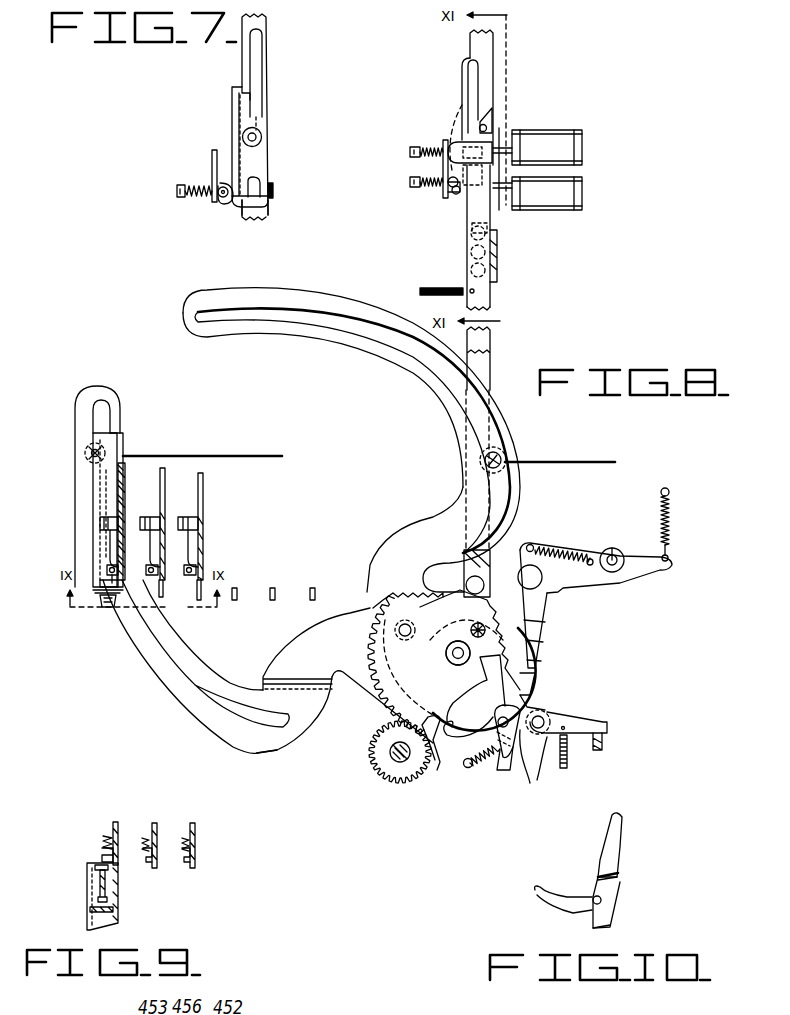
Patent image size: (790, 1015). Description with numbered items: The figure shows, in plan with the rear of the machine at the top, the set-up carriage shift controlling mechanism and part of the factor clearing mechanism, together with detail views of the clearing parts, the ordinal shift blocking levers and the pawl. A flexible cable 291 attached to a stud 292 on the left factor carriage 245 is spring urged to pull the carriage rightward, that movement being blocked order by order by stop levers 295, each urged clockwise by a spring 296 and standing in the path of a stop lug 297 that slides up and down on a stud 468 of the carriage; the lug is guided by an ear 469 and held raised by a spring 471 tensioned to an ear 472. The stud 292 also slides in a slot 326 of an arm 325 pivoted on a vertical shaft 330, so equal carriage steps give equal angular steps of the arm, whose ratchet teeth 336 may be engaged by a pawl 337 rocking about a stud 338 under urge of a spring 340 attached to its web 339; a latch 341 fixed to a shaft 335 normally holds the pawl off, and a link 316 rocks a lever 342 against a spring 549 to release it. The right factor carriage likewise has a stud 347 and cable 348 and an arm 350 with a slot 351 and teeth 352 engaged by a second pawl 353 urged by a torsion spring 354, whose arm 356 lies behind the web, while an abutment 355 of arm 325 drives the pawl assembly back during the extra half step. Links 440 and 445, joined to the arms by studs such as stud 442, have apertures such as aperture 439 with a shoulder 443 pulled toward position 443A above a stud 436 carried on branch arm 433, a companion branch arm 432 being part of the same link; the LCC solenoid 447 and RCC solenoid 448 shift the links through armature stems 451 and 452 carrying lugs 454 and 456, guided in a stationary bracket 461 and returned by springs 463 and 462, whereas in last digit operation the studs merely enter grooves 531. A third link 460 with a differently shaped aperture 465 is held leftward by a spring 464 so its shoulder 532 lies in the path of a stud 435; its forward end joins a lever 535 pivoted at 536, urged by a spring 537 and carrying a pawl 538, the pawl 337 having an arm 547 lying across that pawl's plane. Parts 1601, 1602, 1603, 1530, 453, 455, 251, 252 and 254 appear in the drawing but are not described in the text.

In FIG. 7, the branch arm 433 is at (268, 22).
In FIG. 7, the groove 531 is at (258, 70).
In FIG. 7, the shoulder 443 is at (245, 90).
In FIG. 7, the shoulder position 443A is at (240, 103).
In FIG. 7, the aperture 439 is at (245, 162).
In FIG. 7, the stud 436 is at (262, 120).
In FIG. 7, the lug 454 is at (255, 185).
In FIG. 8, the lug 454 is at (471, 233).
In FIG. 7, the armature stem 451 is at (273, 191).
In FIG. 8, the armature stem 451 is at (483, 212).
In FIG. 7, the stationary bracket 461 is at (212, 166).
In FIG. 8, the stationary bracket 461 is at (443, 168).
In FIG. 7, the bolt and spring 453 is at (222, 200).
In FIG. 8, the bolt and spring 453 is at (455, 194).
In FIG. 7, the link 440 is at (262, 212).
In FIG. 8, the link 440 is at (550, 339).
In FIG. 8, the branch arm 432 is at (487, 50).
In FIG. 8, the aperture 465 is at (460, 80).
In FIG. 8, the shoulder 532 is at (482, 84).
In FIG. 8, the stud 435 is at (492, 110).
In FIG. 8, the last digit link 460 is at (462, 93).
In FIG. 8, the lug 456 is at (460, 110).
In FIG. 8, the pivot body 455 is at (455, 140).
In FIG. 8, the spring 462 is at (433, 147).
In FIG. 8, the spring 463 is at (443, 190).
In FIG. 8, the armature stem 452 is at (505, 140).
In FIG. 8, the RCC solenoid 448 is at (570, 142).
In FIG. 8, the LCC solenoid 447 is at (577, 194).
In FIG. 8, the link 445 is at (490, 218).
In FIG. 8, the spring 464 is at (435, 288).
In FIG. 8, the slot 351 is at (438, 370).
In FIG. 8, the right factor carriage arm 350 is at (417, 513).
In FIG. 8, the stud 347 is at (503, 453).
In FIG. 8, the flexible cable 348 is at (592, 460).
In FIG. 8, the lever 535 is at (590, 558).
In FIG. 8, the pivot 536 is at (613, 552).
In FIG. 8, the spring 537 is at (670, 513).
In FIG. 8, the ratchet teeth 336 is at (530, 627).
In FIG. 8, the pawl 538 is at (520, 645).
In FIG. 8, the teeth 352 is at (528, 663).
In FIG. 8, the second pawl 353 is at (517, 683).
In FIG. 8, the torsion spring 354 is at (510, 697).
In FIG. 8, the shaft 335 is at (550, 722).
In FIG. 8, the lever 342 is at (607, 727).
In FIG. 8, the link 316 is at (604, 744).
In FIG. 8, the spring 549 is at (569, 755).
In FIG. 8, the gear segment 1602 is at (372, 612).
In FIG. 8, the toothed plate 1601 is at (376, 644).
In FIG. 8, the stud 442 is at (457, 650).
In FIG. 8, the vertical shaft 330 is at (453, 657).
In FIG. 8, the gear 1603 is at (377, 748).
In FIG. 8, the shaft 1530 is at (400, 763).
In FIG. 8, the pawl 337 is at (460, 730).
In FIG. 10, the pawl 337 is at (587, 887).
In FIG. 8, the stud 338 is at (497, 714).
In FIG. 10, the stud 338 is at (600, 900).
In FIG. 8, the arm 356 is at (510, 765).
In FIG. 8, the abutment 355 is at (440, 745).
In FIG. 8, the spring 340 is at (478, 768).
In FIG. 8, the latch 341 is at (533, 752).
In FIG. 8, the slot 326 is at (190, 700).
In FIG. 8, the arm 325 is at (280, 745).
In FIG. 8, the lever 251 is at (92, 487).
In FIG. 8, the left factor carriage 245 is at (167, 410).
In FIG. 9, the left factor carriage 245 is at (88, 922).
In FIG. 8, the rod 252 is at (122, 433).
In FIG. 8, the stud 292 is at (100, 457).
In FIG. 8, the flexible cable 291 is at (232, 455).
In FIG. 8, the stop lever 295 is at (113, 603).
In FIG. 9, the stop lever 295 is at (151, 826).
In FIG. 8, the stud 468 is at (105, 582).
In FIG. 8, the stop lug 297 is at (100, 587).
In FIG. 9, the stop lug 297 is at (105, 855).
In FIG. 8, the foot 254 is at (90, 593).
In FIG. 9, the spring 296 is at (107, 837).
In FIG. 9, the ear 472 is at (95, 867).
In FIG. 9, the spring 471 is at (100, 880).
In FIG. 9, the ear 469 is at (98, 897).
In FIG. 10, the arm 547 is at (618, 843).
In FIG. 10, the web 339 is at (607, 928).